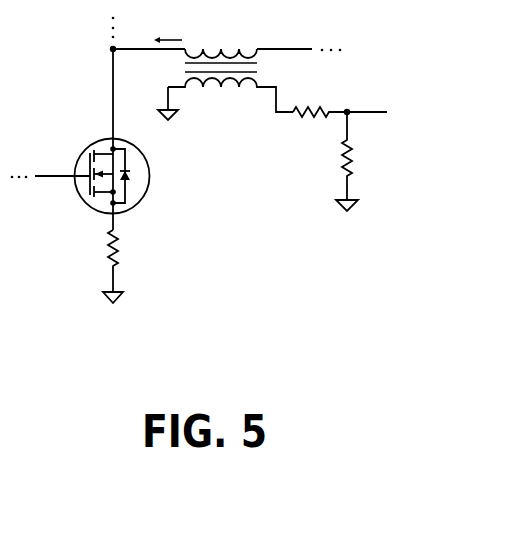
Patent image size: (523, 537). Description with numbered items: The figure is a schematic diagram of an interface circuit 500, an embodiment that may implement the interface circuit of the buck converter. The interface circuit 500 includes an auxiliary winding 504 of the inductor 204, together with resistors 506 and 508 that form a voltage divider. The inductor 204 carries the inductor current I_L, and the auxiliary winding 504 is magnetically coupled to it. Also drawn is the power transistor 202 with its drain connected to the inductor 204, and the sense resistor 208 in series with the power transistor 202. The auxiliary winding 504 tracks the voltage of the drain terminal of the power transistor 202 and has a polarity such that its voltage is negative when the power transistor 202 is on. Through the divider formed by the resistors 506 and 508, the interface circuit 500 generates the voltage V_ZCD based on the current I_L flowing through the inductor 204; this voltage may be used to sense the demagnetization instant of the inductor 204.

The interface circuit 500 is at (226, 160).
The power transistor 202 is at (80, 201).
The inductor 204 is at (227, 50).
The sense resistor 208 is at (120, 231).
The auxiliary winding 504 is at (233, 86).
The resistor 506 is at (300, 116).
The resistor 508 is at (340, 150).